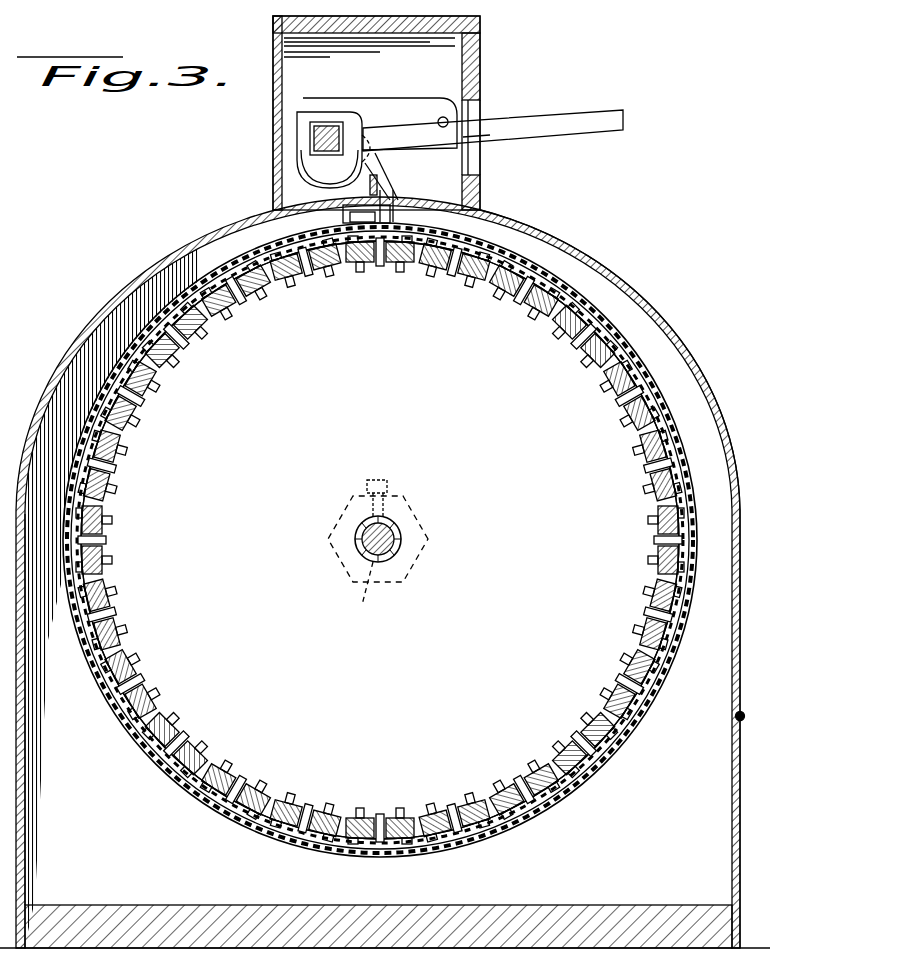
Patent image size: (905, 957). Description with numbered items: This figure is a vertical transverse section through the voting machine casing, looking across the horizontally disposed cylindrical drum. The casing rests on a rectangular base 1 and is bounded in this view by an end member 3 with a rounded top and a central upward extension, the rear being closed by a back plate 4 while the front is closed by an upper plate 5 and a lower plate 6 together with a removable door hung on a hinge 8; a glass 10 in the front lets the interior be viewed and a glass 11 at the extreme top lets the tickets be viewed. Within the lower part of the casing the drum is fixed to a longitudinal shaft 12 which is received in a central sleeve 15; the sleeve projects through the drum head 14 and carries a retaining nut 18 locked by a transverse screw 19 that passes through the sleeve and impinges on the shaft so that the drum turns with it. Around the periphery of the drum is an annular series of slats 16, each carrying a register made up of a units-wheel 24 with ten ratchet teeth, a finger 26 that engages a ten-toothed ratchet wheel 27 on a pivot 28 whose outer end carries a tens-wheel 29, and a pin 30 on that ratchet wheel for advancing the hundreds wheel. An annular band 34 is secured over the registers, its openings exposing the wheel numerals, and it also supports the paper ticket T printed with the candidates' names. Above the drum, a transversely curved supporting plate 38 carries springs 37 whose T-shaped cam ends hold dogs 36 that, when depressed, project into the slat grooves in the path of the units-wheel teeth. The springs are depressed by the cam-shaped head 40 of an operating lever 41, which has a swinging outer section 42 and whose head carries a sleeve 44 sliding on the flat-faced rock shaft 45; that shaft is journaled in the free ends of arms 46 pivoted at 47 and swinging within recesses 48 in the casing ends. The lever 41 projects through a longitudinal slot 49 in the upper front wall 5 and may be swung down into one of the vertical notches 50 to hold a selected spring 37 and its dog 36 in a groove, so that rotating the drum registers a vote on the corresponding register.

The base 1 is at (556, 905).
The end member 3 is at (341, 709).
The back plate 4 is at (72, 352).
The upper front plate 5 is at (382, 113).
The lower front plate 6 is at (740, 828).
The hinge 8 is at (743, 713).
The glass 10 is at (590, 252).
The top glass 11 is at (482, 24).
The shaft 12 is at (396, 548).
The drum head 14 is at (380, 540).
The sleeve 15 is at (392, 525).
The slats 16 is at (200, 765).
The retaining nut 18 is at (361, 603).
The transverse screw 19 is at (387, 475).
The units-wheel 24 is at (112, 652).
The finger 26 is at (148, 387).
The ratchet wheel 27 is at (145, 405).
The pivot 28 is at (166, 352).
The tens-wheel 29 is at (135, 680).
The pin 30 is at (128, 413).
The register covering band 34 is at (682, 430).
The dog 36 is at (348, 272).
The spring 37 is at (275, 205).
The supporting plate 38 is at (142, 292).
The cam-shaped head 40 is at (302, 176).
The operating lever 41 is at (478, 134).
The swinging outer section 42 is at (585, 117).
The sleeve 44 is at (297, 130).
The rock shaft 45 is at (328, 124).
The arms 46 is at (387, 112).
The pivot 47 is at (443, 117).
The recess 48 is at (300, 88).
The slot 49 is at (480, 108).
The notches 50 is at (480, 170).
The ticket T is at (660, 385).